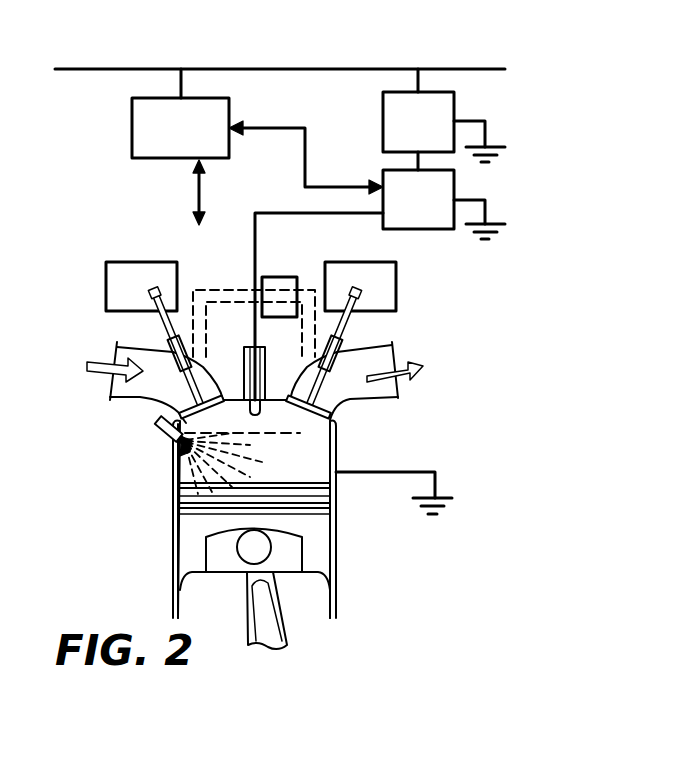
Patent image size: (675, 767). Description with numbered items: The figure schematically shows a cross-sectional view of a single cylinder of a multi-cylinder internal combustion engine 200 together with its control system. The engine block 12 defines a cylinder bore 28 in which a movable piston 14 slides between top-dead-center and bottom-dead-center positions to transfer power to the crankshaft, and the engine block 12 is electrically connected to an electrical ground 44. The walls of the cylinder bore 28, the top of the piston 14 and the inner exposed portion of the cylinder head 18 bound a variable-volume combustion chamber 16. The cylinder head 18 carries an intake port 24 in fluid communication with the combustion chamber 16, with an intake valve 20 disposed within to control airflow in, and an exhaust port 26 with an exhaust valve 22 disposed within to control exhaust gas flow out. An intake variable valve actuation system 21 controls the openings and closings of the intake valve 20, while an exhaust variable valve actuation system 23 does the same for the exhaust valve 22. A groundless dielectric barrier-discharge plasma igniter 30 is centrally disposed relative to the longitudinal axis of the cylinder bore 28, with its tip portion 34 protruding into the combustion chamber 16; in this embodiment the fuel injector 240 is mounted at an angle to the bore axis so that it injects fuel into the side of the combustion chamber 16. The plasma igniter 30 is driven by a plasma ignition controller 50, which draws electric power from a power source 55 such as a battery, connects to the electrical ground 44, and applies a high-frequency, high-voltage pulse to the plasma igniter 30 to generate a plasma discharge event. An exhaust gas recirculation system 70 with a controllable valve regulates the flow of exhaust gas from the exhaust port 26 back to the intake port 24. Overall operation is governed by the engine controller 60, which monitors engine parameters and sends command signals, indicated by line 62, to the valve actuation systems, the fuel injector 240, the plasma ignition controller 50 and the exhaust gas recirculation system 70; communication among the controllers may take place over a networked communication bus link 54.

The engine block 12 is at (338, 572).
The piston 14 is at (267, 518).
The combustion chamber 16 is at (262, 459).
The cylinder head 18 is at (292, 345).
The intake valve 20 is at (166, 330).
The intake variable valve actuation system 21 is at (106, 285).
The exhaust valve 22 is at (342, 327).
The exhaust variable valve actuation system 23 is at (396, 285).
The intake port 24 is at (140, 399).
The exhaust port 26 is at (368, 398).
The cylinder bore 28 is at (200, 463).
The plasma igniter 30 is at (243, 375).
The tip portion 34 is at (492, 158).
The electrical ground 44 is at (421, 512).
The plasma ignition controller 50 is at (431, 212).
The networked communication bus link 54 is at (222, 68).
The power source 55 is at (431, 135).
The engine controller 60 is at (194, 142).
The command signal line 62 is at (203, 192).
The exhaust gas recirculation system 70 is at (280, 277).
The internal combustion engine 200 is at (110, 190).
The fuel injector 240 is at (158, 432).